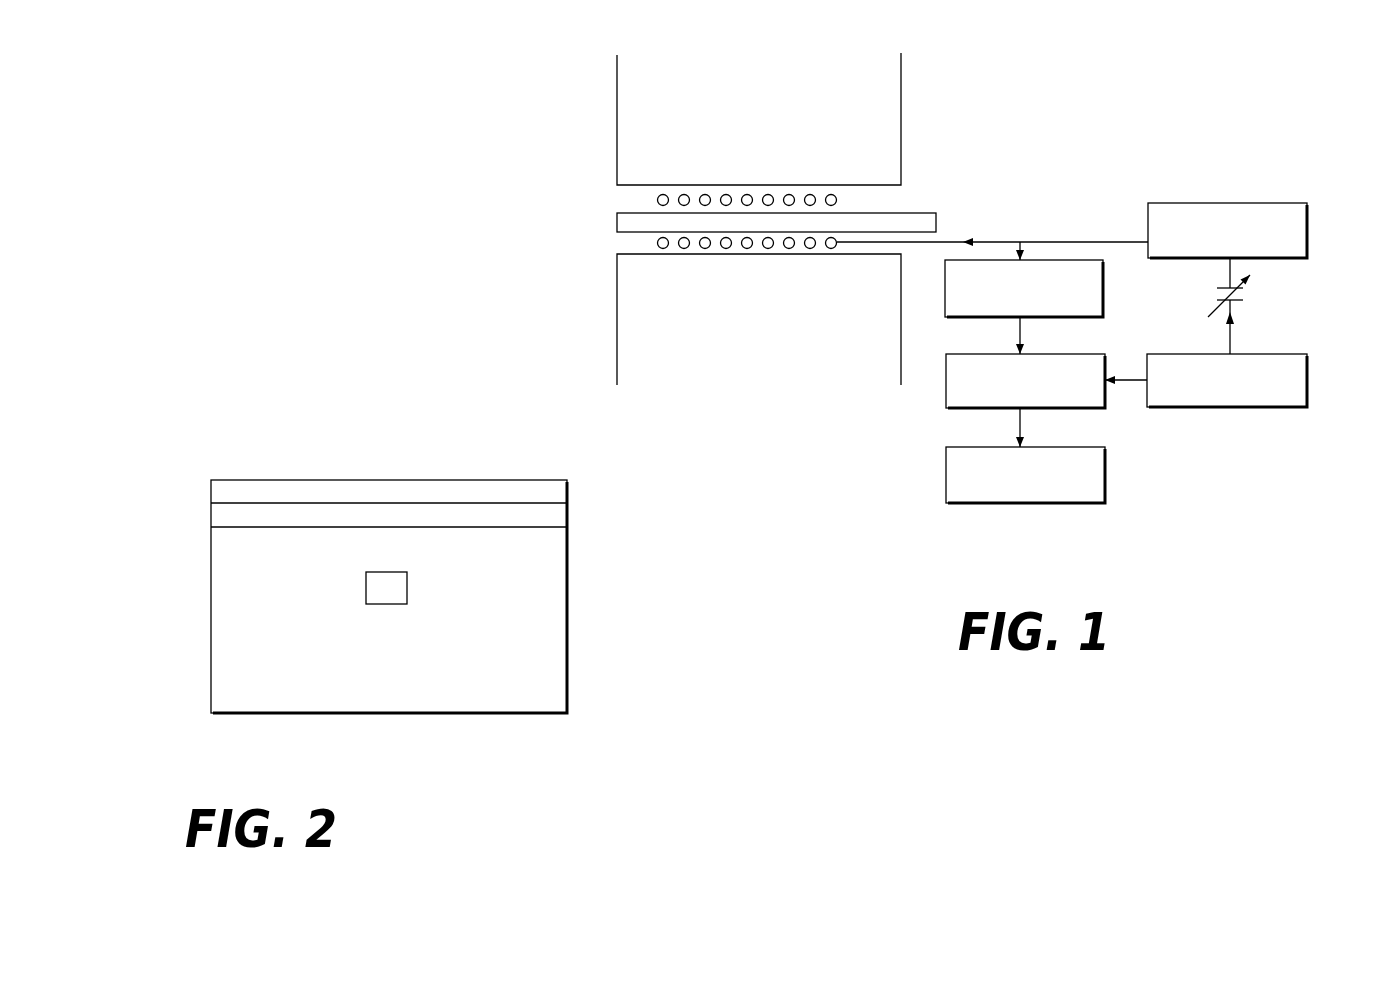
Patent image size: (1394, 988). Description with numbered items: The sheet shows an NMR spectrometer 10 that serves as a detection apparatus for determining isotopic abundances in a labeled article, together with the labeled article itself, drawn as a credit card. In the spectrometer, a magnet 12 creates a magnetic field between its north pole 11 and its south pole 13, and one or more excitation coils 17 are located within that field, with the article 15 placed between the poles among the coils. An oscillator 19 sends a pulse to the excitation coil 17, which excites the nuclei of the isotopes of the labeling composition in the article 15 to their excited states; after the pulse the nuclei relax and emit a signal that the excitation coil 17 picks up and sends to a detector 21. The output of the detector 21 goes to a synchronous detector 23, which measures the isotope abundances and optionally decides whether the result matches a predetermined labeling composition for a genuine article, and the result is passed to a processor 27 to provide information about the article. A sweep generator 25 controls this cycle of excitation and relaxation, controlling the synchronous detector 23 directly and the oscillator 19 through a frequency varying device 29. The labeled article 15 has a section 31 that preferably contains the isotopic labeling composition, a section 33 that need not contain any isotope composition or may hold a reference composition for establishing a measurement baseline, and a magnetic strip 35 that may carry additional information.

In FIG. 1, the NMR spectrometer 10 is at (990, 118).
In FIG. 1, the north pole 11 is at (849, 104).
In FIG. 1, the magnet 12 is at (598, 130).
In FIG. 1, the south pole 13 is at (810, 302).
In FIG. 1, the article 15 is at (918, 218).
In FIG. 2, the article 15 is at (427, 616).
In FIG. 1, the excitation coil 17 is at (657, 200).
In FIG. 1, the oscillator 19 is at (1305, 203).
In FIG. 1, the detector 21 is at (1103, 295).
In FIG. 1, the synchronous detector 23 is at (946, 398).
In FIG. 1, the sweep generator 25 is at (1305, 407).
In FIG. 1, the processor 27 is at (946, 490).
In FIG. 1, the frequency varying device 29 is at (1240, 301).
In FIG. 2, the section 31 is at (370, 586).
In FIG. 2, the section 33 is at (540, 583).
In FIG. 2, the magnetic strip 35 is at (490, 516).